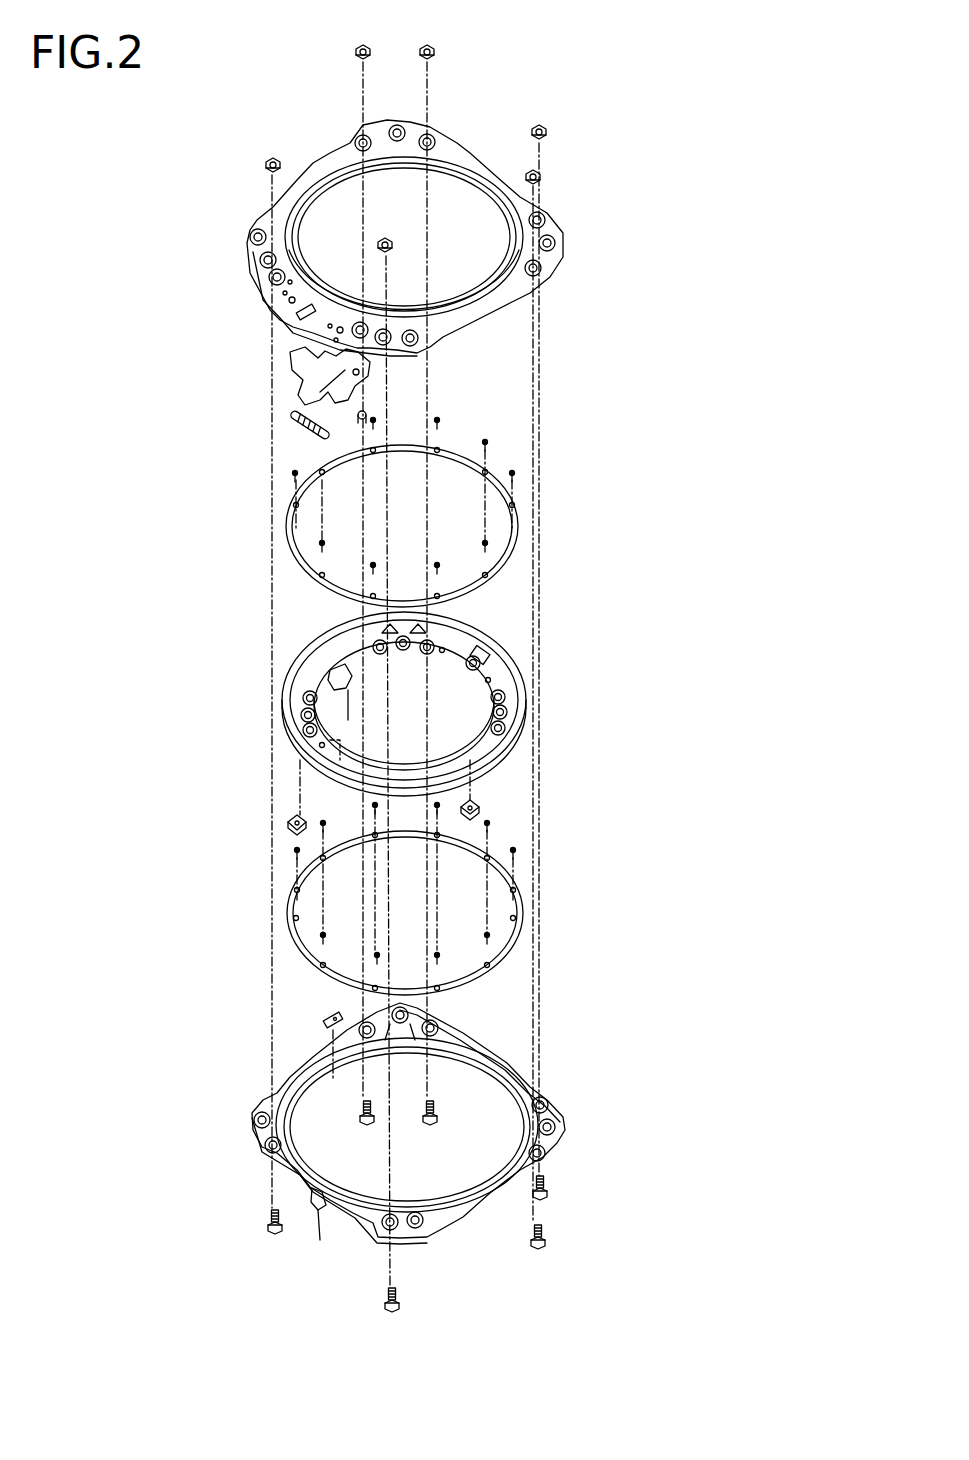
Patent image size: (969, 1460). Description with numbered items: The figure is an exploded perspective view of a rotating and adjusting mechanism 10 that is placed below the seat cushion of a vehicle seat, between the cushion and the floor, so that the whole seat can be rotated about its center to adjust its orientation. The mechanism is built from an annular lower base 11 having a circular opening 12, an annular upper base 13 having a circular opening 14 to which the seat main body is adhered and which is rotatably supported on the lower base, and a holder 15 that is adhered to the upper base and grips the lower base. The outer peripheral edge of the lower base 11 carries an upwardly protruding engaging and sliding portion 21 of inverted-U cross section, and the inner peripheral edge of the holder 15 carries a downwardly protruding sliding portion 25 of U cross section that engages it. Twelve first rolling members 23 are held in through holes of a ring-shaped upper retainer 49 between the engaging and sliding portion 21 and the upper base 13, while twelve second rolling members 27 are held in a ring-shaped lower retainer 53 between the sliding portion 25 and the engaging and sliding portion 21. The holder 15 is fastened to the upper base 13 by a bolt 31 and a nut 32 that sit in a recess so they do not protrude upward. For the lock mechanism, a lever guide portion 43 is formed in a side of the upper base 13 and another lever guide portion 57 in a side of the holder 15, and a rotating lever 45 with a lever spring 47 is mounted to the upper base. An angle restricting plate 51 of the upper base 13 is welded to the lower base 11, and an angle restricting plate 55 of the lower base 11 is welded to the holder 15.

The rotating and adjusting mechanism 10 is at (665, 84).
The annular lower base 11 is at (535, 655).
The circular opening 12 is at (335, 680).
The annular upper base 13 is at (470, 150).
The circular opening 14 is at (483, 275).
The holder 15 is at (483, 1037).
The engaging and sliding portion 21 is at (522, 700).
The first rolling member 23 is at (512, 470).
The sliding portion 25 is at (520, 1056).
The second rolling member 27 is at (295, 852).
The bolt 31 is at (368, 1128).
The nut 32 is at (420, 48).
The lever guide portion 43 is at (298, 314).
The rotating lever 45 is at (302, 388).
The lever spring 47 is at (292, 425).
The upper retainer 49 is at (306, 571).
The angle restricting plate 51 is at (287, 823).
The lower retainer 53 is at (305, 955).
The angle restricting plate 55 is at (323, 1020).
The lever guide portion 57 is at (318, 1212).